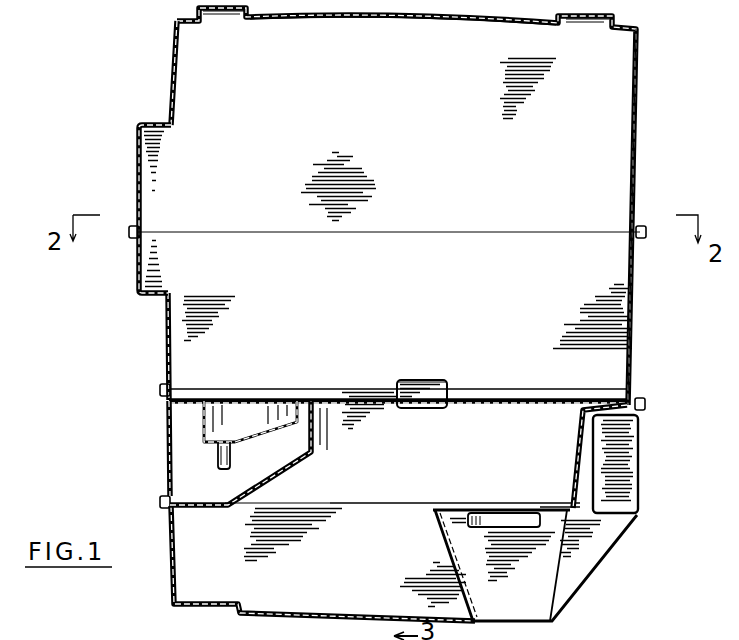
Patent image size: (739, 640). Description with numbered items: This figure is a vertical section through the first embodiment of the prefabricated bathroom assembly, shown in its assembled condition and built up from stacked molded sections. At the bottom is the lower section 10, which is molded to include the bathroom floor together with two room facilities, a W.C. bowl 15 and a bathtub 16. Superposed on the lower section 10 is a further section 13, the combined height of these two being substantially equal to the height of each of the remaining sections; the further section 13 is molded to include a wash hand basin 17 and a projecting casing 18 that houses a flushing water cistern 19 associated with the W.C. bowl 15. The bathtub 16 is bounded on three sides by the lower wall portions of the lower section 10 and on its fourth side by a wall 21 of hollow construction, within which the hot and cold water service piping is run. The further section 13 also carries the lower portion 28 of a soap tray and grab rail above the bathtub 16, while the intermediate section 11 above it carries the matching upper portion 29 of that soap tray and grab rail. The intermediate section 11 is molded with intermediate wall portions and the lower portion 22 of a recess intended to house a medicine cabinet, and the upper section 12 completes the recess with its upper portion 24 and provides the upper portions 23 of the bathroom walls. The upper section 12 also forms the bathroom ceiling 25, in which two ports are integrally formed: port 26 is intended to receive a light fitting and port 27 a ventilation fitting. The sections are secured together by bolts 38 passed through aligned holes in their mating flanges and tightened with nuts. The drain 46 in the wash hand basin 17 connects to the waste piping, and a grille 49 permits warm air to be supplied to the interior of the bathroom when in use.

The lower section 10 is at (380, 549).
The intermediate section 11 is at (428, 289).
The upper section 12 is at (437, 137).
The further section 13 is at (432, 458).
The W.C. bowl 15 is at (490, 513).
The bathtub 16 is at (343, 503).
The wash hand basin 17 is at (284, 406).
The projecting casing 18 is at (579, 440).
The flushing water cistern 19 is at (634, 464).
The wall 21 is at (380, 512).
The lower portion of recess 22 is at (140, 266).
The upper portions of bathroom walls 23 is at (638, 148).
The upper portion of recess 24 is at (140, 160).
The bathroom ceiling 25 is at (412, 20).
The port 26 is at (232, 20).
The port 27 is at (592, 27).
The lower portion of soap tray and grab rail 28 is at (440, 401).
The upper portion of soap tray and grab rail 29 is at (438, 392).
The bolt 38 is at (642, 228).
The drain 46 is at (224, 442).
The grille 49 is at (288, 461).